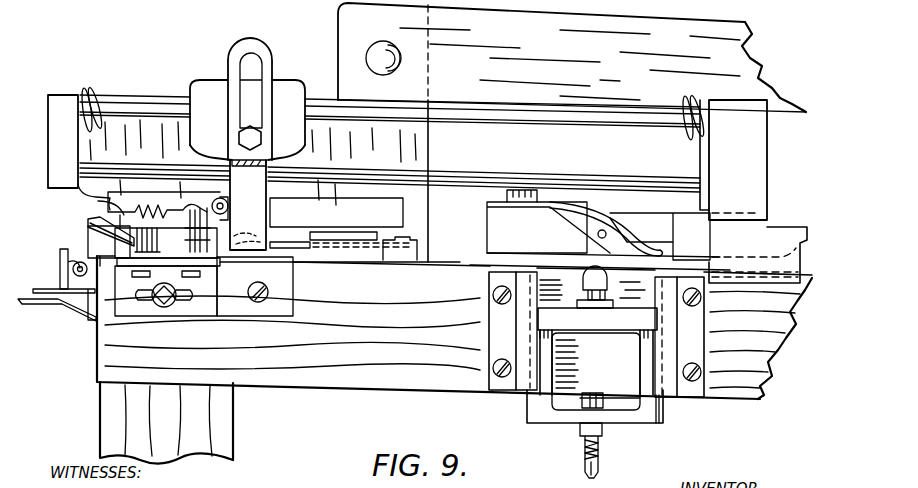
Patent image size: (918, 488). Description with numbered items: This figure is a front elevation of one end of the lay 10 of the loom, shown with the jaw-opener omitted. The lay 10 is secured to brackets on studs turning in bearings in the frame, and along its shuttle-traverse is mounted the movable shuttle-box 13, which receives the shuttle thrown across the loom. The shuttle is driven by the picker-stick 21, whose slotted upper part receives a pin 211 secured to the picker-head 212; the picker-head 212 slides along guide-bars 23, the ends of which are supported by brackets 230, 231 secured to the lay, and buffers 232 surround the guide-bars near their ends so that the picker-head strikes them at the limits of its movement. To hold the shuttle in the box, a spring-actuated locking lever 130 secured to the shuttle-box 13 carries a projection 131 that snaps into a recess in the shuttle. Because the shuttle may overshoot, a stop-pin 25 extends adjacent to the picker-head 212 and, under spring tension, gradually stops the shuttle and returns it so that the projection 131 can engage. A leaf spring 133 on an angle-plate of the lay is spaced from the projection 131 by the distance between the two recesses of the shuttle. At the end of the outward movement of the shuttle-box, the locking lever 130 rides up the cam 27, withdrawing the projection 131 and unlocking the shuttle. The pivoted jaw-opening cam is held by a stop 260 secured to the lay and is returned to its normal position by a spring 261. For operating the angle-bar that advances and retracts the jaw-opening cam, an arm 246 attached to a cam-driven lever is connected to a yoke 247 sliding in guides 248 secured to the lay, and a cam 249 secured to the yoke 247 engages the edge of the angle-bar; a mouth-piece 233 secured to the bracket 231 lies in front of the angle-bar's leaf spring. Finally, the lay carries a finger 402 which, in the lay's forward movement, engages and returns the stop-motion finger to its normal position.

The lay 10 is at (348, 338).
The movable shuttle-box 13 is at (448, 258).
The picker-stick 21 is at (263, 52).
The guide-bars 23 is at (541, 178).
The stop-pin 25 is at (214, 200).
The cam 27 is at (93, 213).
The spring-actuated locking lever 130 is at (268, 214).
The projection 131 is at (327, 205).
The leaf spring 133 is at (597, 213).
The pin 211 is at (252, 137).
The picker-head 212 is at (205, 86).
The bracket 230 is at (58, 100).
The bracket 231 is at (740, 163).
The buffers 232 is at (92, 96).
The mouth-piece 233 is at (778, 236).
The arm 246 is at (605, 450).
The yoke 247 is at (568, 413).
The guides 248 is at (523, 372).
The cam 249 is at (596, 277).
The stop 260 is at (127, 245).
The spring 261 is at (107, 202).
The finger 402 is at (50, 311).